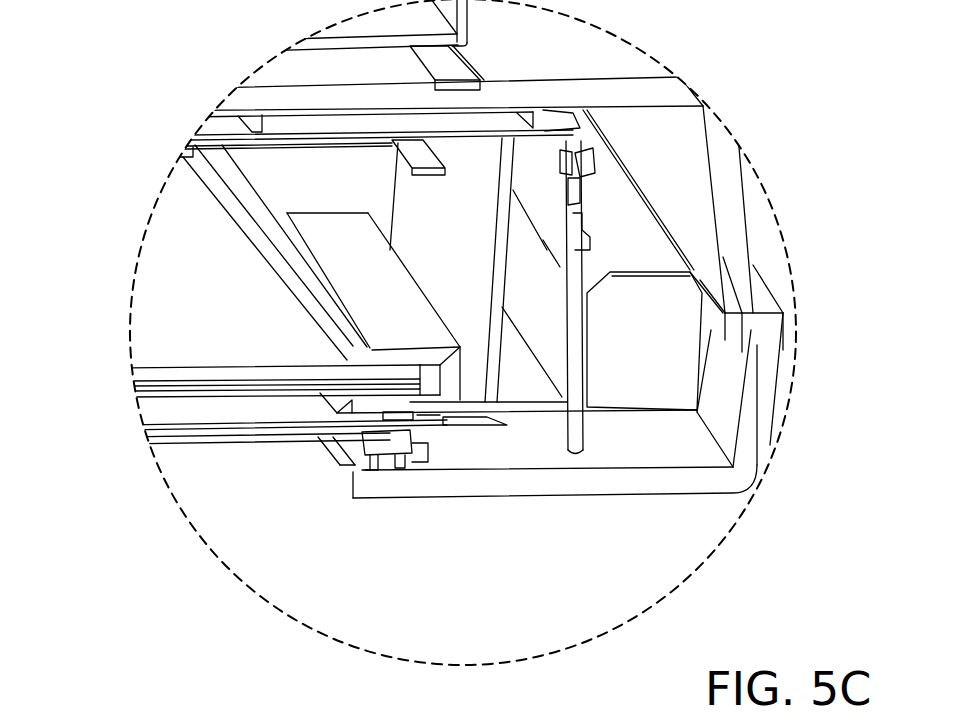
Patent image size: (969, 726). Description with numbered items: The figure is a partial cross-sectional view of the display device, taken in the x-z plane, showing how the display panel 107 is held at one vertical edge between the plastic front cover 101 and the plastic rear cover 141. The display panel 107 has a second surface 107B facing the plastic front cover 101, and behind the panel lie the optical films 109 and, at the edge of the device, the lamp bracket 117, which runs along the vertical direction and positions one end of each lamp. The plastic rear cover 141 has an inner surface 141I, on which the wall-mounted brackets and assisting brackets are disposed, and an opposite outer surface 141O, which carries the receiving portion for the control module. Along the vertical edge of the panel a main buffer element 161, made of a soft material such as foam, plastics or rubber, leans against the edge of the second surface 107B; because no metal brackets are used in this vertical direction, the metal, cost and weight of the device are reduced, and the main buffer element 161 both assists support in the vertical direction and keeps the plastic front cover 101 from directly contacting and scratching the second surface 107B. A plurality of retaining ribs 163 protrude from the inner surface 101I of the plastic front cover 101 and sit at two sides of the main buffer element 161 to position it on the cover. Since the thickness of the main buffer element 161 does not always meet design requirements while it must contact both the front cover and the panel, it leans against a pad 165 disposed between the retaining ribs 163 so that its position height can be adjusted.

The plastic front cover 101 is at (752, 444).
The inner surface of the plastic front cover 101I is at (668, 446).
The display panel 107 is at (198, 440).
The second surface of the display panel 107B is at (267, 452).
The optical films 109 is at (172, 372).
The lamp bracket 117 is at (532, 408).
The plastic rear cover 141 is at (730, 183).
The inner surface of the plastic rear cover 141I is at (645, 120).
The outer surface of the plastic rear cover 141O is at (590, 73).
The main buffer element 161 is at (395, 458).
The retaining ribs 163 is at (360, 457).
The pad 165 is at (377, 460).